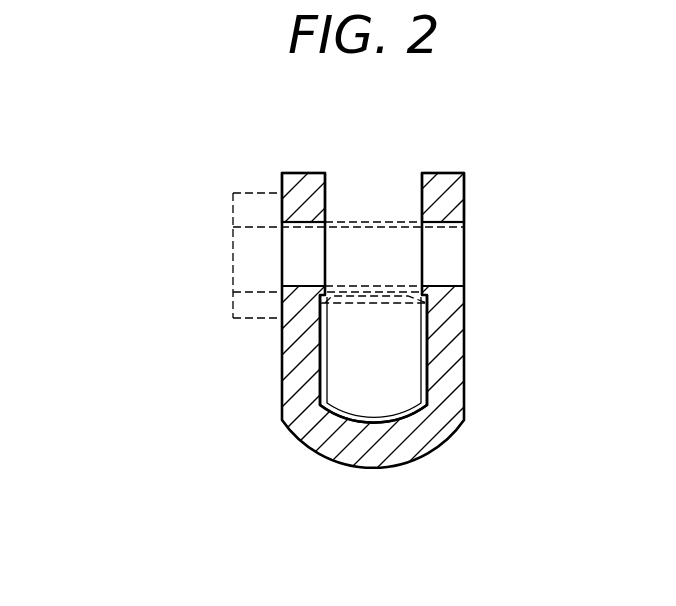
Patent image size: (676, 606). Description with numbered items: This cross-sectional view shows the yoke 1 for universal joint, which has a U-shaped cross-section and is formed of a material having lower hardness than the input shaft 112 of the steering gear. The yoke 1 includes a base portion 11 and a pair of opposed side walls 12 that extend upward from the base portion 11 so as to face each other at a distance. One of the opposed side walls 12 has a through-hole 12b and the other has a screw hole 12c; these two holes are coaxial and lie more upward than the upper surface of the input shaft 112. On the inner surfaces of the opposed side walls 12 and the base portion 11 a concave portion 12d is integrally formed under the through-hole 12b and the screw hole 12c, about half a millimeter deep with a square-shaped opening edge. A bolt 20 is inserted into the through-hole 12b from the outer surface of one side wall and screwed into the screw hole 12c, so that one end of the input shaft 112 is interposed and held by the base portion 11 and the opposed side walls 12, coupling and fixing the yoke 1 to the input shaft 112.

The yoke for universal joint 1 is at (157, 106).
The base portion 11 is at (332, 453).
The opposed side walls 12 is at (288, 182).
The through-hole 12b is at (293, 296).
The screw hole 12c is at (445, 284).
The concave portion 12d is at (427, 380).
The bolt 20 is at (244, 246).
The input shaft 112 is at (372, 320).